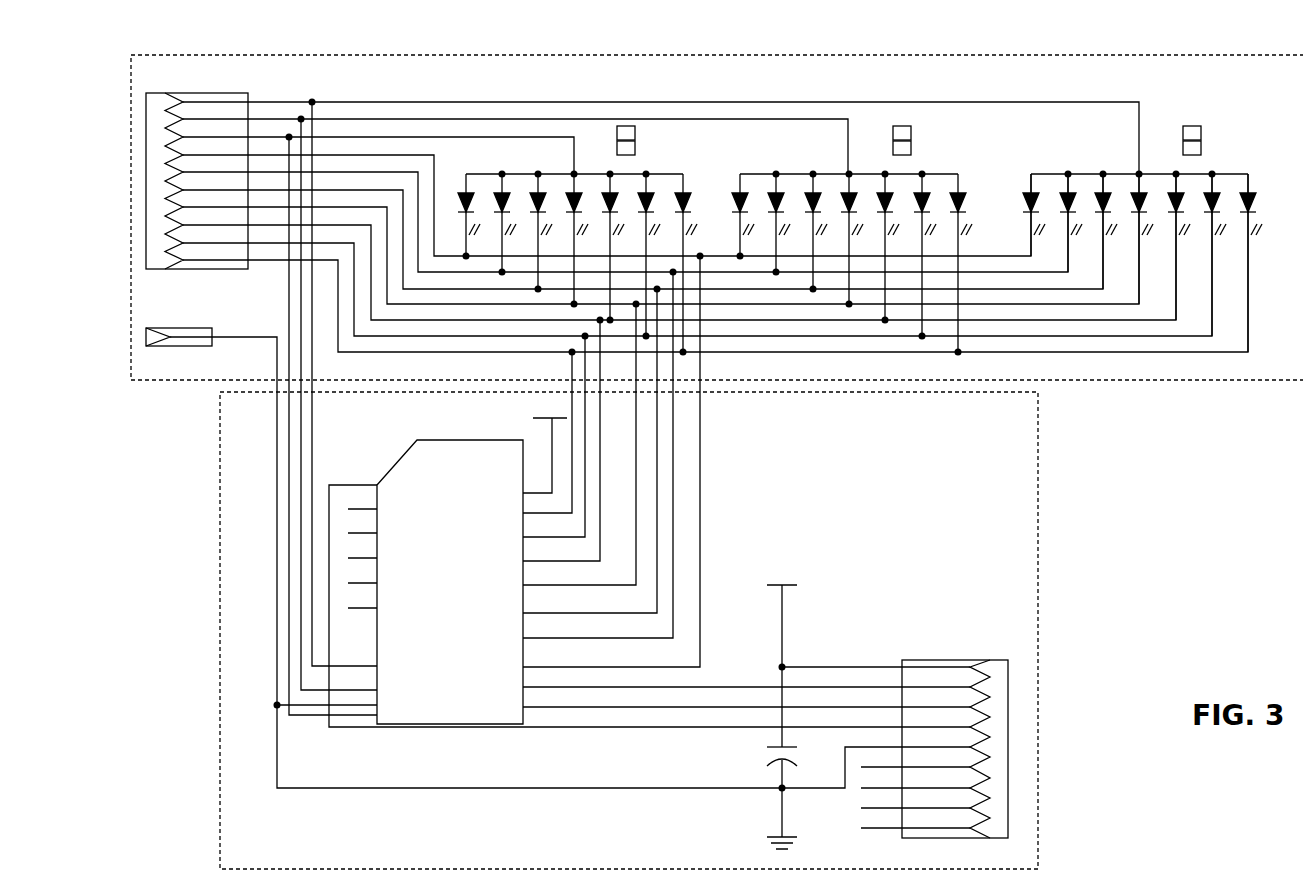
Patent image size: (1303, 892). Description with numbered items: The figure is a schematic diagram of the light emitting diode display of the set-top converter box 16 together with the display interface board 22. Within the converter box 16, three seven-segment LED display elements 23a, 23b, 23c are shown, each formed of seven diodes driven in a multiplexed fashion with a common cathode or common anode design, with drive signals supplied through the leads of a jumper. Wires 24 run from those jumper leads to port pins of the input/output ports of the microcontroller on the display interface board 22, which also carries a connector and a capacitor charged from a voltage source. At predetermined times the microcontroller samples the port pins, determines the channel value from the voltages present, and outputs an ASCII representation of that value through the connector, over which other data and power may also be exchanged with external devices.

The set-top converter box 16 is at (717, 421).
The display interface board 22 is at (1057, 560).
The seven-segment light emitting diode display element 23a is at (702, 180).
The seven-segment light emitting diode display element 23b is at (976, 182).
The seven-segment light emitting diode display element 23c is at (1267, 182).
The wires 24 is at (720, 513).